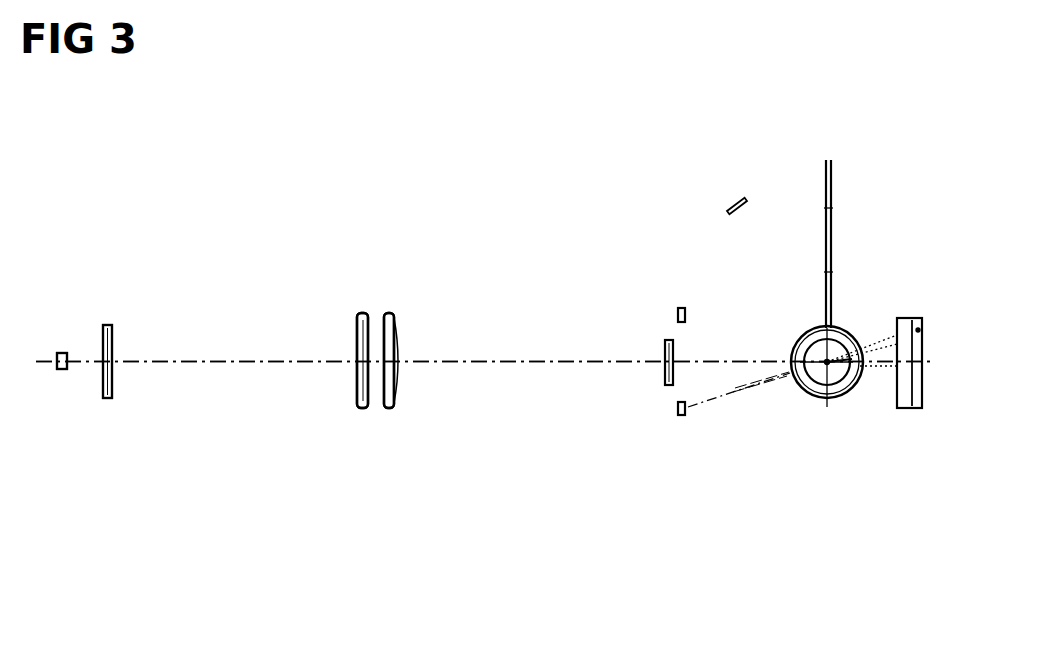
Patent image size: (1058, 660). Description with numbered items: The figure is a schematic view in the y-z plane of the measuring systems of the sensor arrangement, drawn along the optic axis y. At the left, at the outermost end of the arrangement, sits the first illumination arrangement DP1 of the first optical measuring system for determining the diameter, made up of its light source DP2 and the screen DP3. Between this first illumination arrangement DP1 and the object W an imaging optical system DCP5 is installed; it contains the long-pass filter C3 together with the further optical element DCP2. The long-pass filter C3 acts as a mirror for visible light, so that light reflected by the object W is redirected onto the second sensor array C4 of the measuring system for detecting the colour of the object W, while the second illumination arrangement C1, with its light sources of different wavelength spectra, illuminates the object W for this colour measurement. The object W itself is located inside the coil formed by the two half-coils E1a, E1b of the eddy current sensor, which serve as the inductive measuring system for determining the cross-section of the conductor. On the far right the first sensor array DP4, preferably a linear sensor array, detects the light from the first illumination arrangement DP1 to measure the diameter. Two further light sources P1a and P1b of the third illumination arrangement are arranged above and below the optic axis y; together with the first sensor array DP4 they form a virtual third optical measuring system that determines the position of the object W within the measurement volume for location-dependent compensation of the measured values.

The first illumination arrangement DP1 is at (167, 418).
The light source DP2 is at (64, 274).
The screen DP3 is at (200, 288).
The optic axis Y is at (485, 429).
The imaging optical system DCP5 is at (415, 292).
The long-pass filter C3 is at (328, 407).
The lens DCP2 is at (451, 407).
The second illumination arrangement C1 is at (647, 167).
The light source P1b is at (607, 247).
The second sensor array C4 is at (610, 306).
The light source P1a is at (686, 437).
The half-coil E1a is at (792, 414).
The half-coil E1b is at (792, 414).
The object W is at (875, 262).
The first sensor array DP4 is at (879, 411).